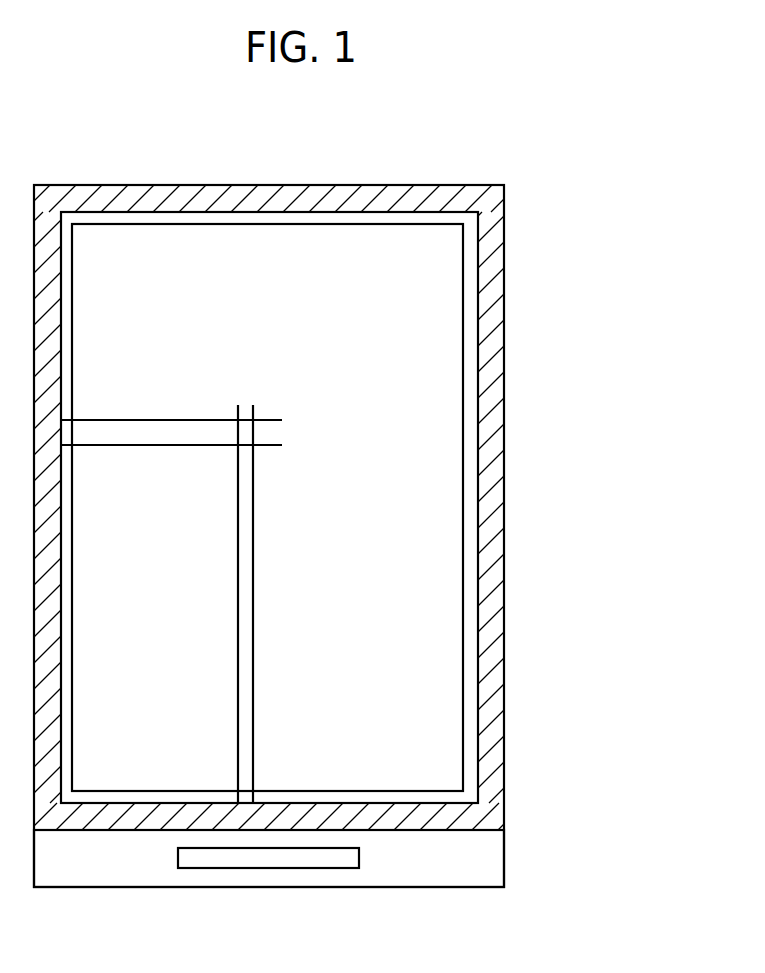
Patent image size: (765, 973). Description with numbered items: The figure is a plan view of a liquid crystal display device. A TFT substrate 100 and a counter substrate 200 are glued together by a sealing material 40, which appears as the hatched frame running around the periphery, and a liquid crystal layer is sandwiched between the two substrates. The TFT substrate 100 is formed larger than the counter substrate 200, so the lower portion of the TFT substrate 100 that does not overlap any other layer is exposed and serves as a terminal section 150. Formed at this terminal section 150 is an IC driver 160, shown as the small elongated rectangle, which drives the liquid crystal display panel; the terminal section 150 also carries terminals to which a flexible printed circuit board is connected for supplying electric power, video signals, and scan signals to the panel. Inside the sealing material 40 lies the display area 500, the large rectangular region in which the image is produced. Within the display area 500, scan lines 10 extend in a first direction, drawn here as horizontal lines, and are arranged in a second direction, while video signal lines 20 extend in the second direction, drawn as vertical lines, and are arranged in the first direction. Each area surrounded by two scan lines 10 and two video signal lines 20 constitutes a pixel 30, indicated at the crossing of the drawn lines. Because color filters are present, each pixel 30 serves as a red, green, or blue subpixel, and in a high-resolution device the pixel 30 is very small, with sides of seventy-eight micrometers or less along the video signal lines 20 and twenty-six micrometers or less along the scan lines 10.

The scan lines 10 is at (145, 446).
The video signal lines 20 is at (255, 542).
The pixel 30 is at (245, 432).
The sealing material 40 is at (490, 395).
The TFT substrate 100 is at (504, 855).
The terminal section 150 is at (417, 860).
The IC driver 160 is at (293, 860).
The counter substrate 200 is at (504, 670).
The display area 500 is at (423, 484).